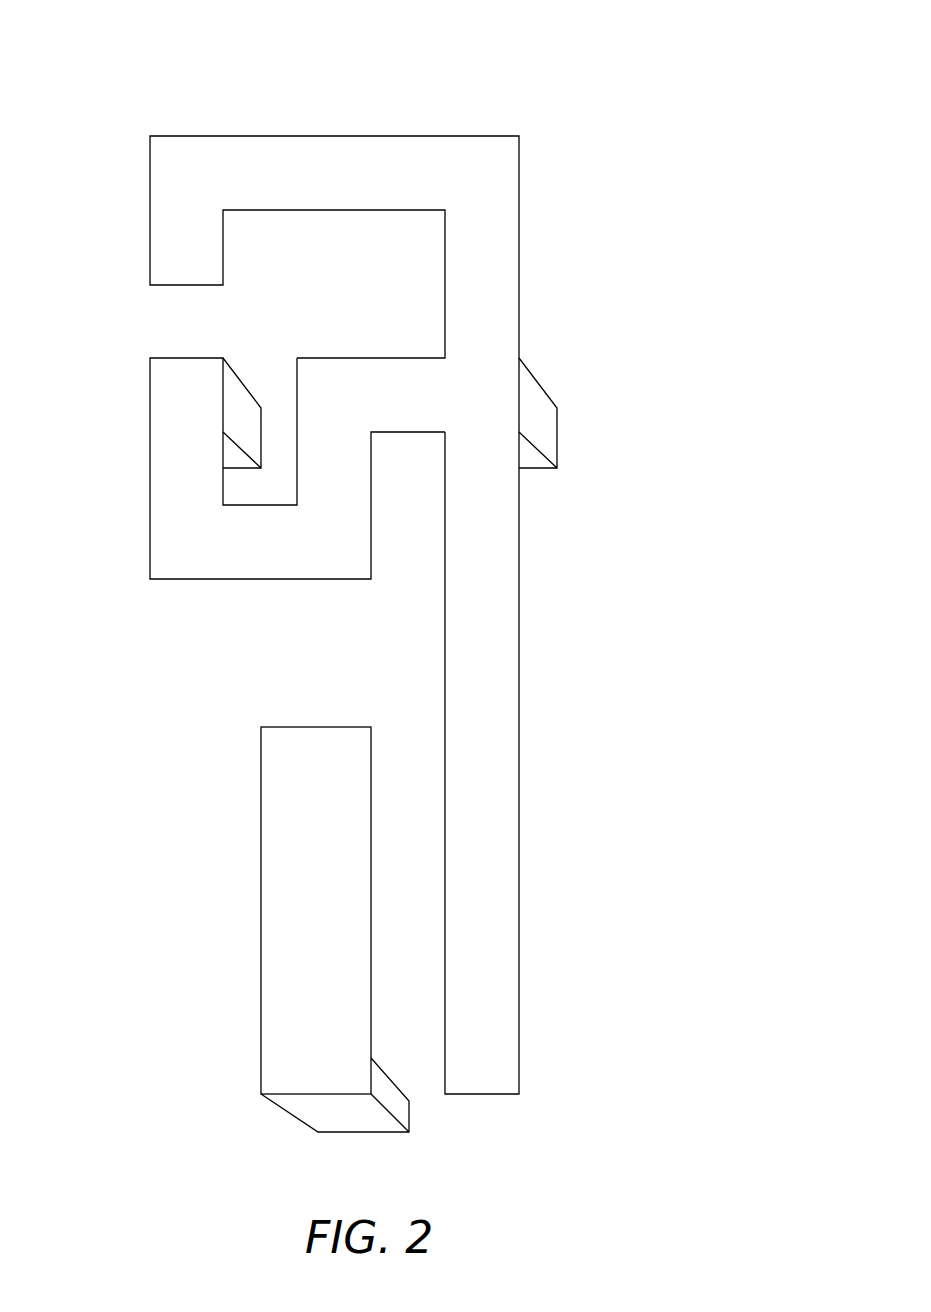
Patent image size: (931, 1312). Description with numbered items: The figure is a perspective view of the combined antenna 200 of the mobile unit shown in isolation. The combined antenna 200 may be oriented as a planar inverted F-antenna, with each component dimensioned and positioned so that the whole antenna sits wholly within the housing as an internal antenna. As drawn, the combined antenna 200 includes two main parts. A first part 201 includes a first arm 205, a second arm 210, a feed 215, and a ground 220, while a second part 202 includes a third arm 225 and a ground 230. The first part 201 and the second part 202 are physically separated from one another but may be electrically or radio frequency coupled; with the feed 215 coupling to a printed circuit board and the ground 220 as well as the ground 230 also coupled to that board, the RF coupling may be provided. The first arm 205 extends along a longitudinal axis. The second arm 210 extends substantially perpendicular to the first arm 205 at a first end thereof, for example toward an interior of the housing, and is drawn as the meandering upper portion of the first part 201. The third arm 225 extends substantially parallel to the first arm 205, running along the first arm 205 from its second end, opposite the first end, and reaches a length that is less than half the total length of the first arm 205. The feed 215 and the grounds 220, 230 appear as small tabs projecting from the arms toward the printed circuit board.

The combined antenna 200 is at (721, 64).
The first part 201 is at (607, 136).
The second part 202 is at (131, 726).
The first arm 205 is at (519, 661).
The second arm 210 is at (150, 212).
The feed 215 is at (558, 437).
The ground 220 is at (150, 468).
The third arm 225 is at (261, 912).
The ground 230 is at (290, 1114).